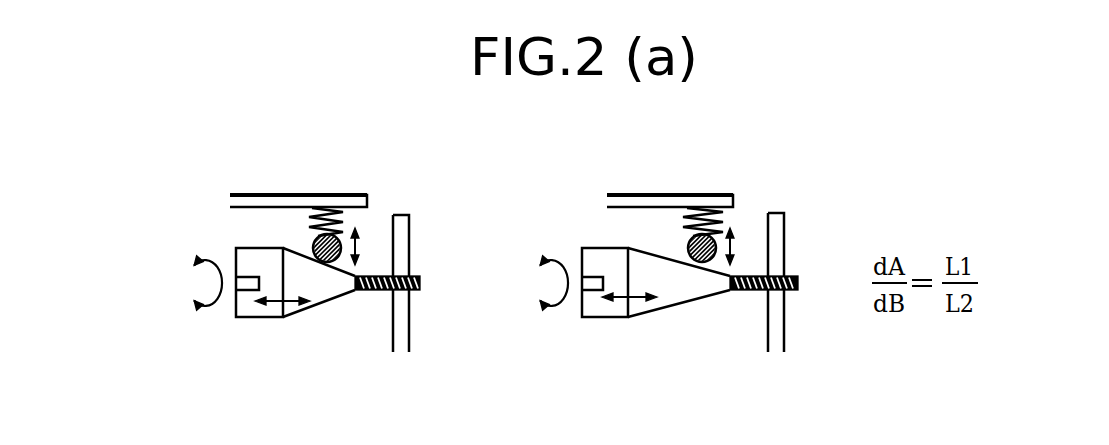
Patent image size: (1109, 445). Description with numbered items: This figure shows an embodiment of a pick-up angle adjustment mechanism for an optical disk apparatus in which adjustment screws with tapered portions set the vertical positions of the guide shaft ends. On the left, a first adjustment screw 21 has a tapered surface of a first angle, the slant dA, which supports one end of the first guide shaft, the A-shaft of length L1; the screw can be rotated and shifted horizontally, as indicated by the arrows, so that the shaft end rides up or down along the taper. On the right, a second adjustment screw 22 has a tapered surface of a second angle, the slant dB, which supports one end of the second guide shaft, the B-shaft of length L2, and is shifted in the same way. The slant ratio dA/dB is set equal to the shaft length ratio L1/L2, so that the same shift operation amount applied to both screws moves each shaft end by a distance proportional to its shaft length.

The adjustment screw 21 is at (250, 318).
The adjustment screw 22 is at (603, 310).
The length of the A-shaft L1 is at (314, 243).
The length of the B-shaft L2 is at (689, 246).
The slant dA is at (323, 308).
The slant dB is at (673, 310).